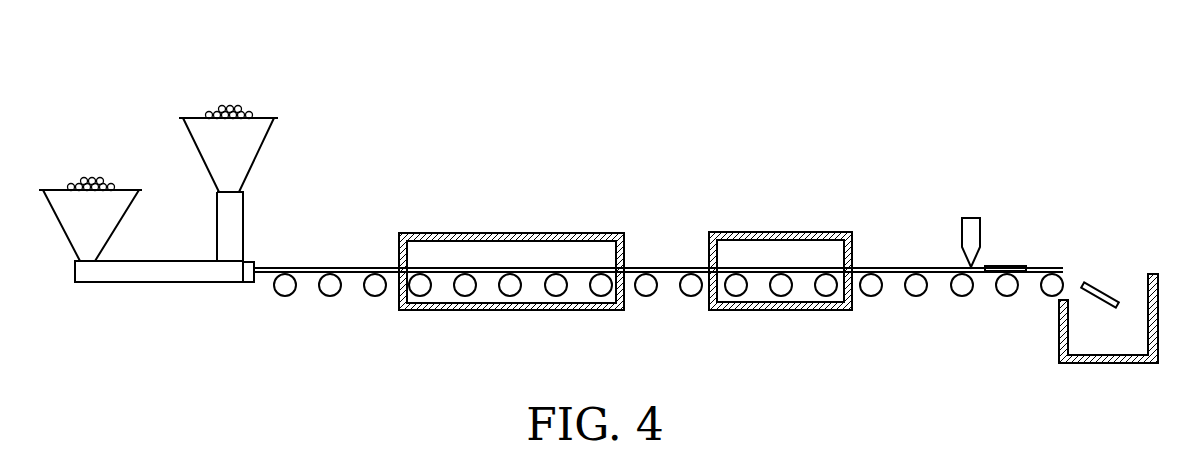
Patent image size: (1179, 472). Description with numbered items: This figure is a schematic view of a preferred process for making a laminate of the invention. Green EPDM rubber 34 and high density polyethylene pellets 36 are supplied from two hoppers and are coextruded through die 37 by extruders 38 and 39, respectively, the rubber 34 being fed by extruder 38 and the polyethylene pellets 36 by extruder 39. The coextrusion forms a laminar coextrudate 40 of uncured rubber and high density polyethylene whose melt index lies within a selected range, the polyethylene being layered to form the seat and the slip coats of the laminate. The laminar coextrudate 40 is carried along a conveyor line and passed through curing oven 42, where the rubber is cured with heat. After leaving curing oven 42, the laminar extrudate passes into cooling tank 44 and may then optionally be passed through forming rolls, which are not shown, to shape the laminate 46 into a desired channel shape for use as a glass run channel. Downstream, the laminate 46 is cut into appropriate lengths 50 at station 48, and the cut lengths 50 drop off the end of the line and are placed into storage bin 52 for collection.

The green EPDM rubber 34 is at (108, 174).
The high density polyethylene pellets 36 is at (247, 106).
The die 37 is at (248, 283).
The extruder 38 is at (123, 273).
The extruder 39 is at (236, 201).
The laminar coextrudate 40 is at (357, 266).
The curing oven 42 is at (505, 232).
The cooling tank 44 is at (776, 232).
The laminate 46 is at (912, 267).
The station 48 is at (971, 217).
The lengths 50 is at (1014, 265).
The storage bin 52 is at (1058, 333).